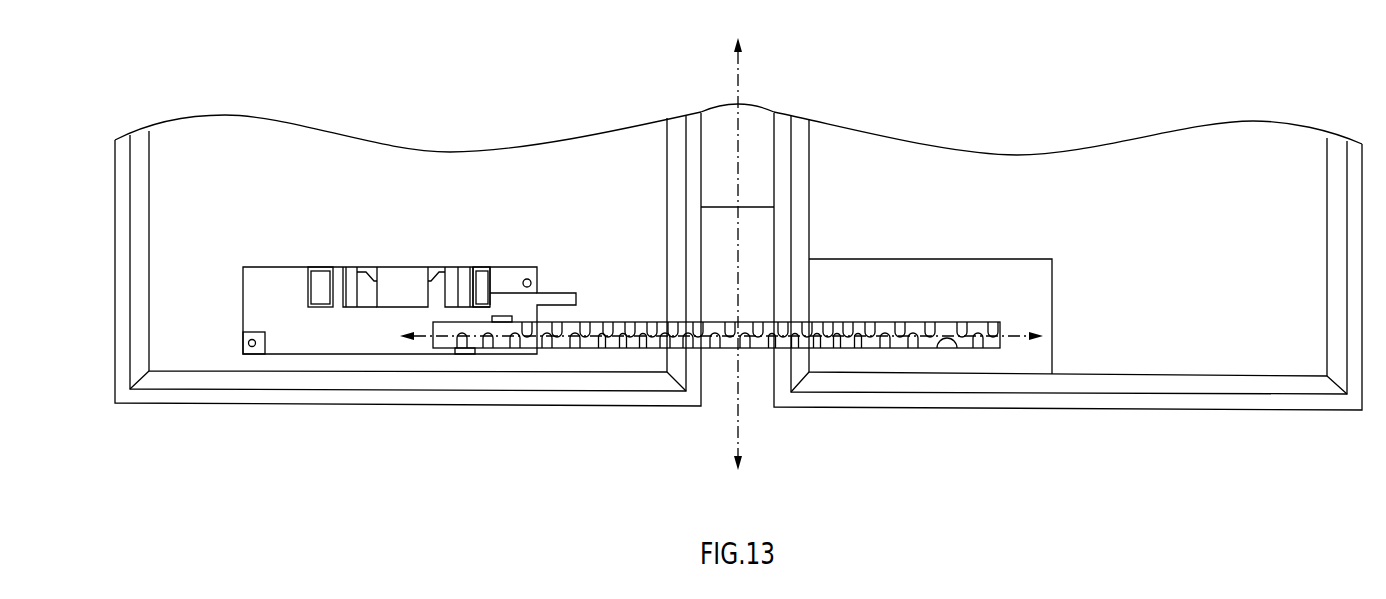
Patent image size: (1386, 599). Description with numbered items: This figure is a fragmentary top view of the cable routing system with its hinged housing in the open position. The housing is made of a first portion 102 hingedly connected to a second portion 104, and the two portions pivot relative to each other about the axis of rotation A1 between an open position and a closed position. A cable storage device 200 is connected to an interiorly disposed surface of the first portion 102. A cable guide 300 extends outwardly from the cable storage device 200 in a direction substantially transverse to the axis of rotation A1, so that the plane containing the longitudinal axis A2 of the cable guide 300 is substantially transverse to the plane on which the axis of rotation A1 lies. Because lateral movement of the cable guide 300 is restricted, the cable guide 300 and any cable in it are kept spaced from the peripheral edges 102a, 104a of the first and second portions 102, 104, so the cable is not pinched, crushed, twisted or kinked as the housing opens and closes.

The first portion 102 is at (268, 422).
The peripheral edge 102a is at (120, 395).
The second portion 104 is at (1163, 425).
The peripheral edge 104a is at (1342, 400).
The cable storage device 200 is at (320, 248).
The cable guide 300 is at (627, 302).
The axis of rotation A1 is at (735, 407).
The longitudinal axis A2 is at (1017, 337).